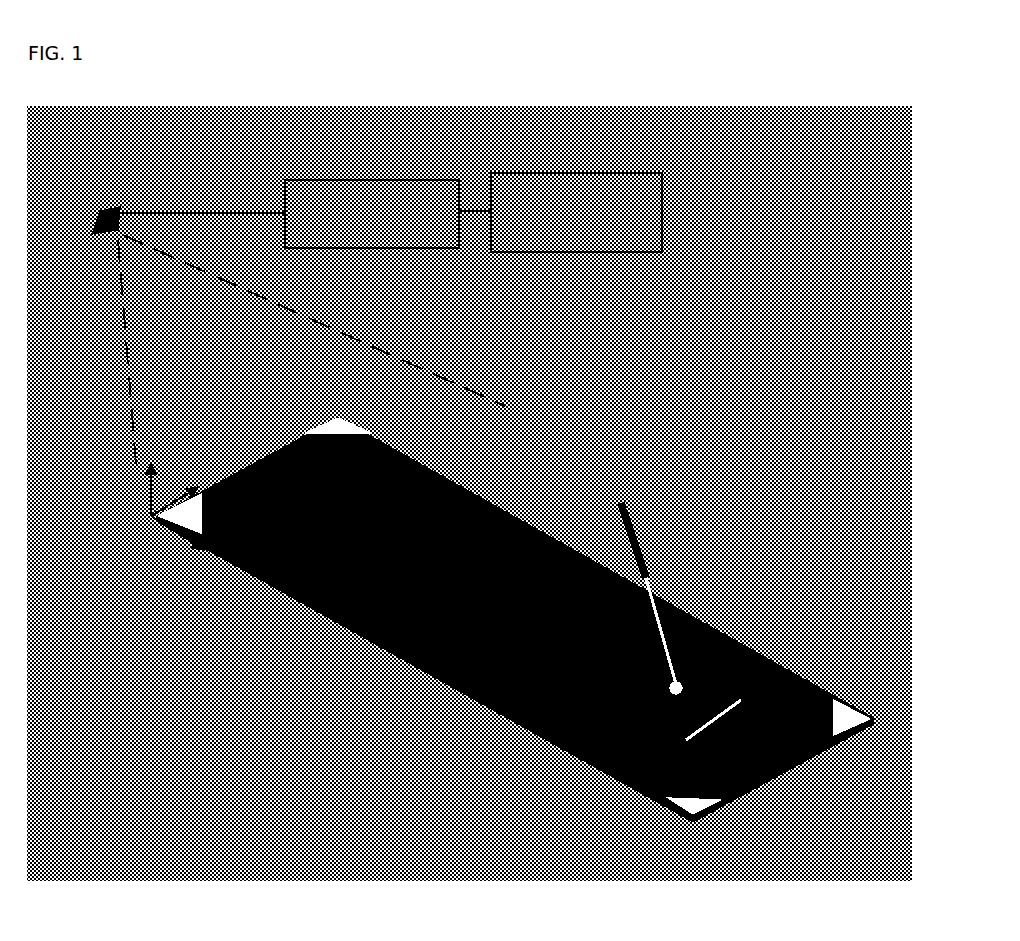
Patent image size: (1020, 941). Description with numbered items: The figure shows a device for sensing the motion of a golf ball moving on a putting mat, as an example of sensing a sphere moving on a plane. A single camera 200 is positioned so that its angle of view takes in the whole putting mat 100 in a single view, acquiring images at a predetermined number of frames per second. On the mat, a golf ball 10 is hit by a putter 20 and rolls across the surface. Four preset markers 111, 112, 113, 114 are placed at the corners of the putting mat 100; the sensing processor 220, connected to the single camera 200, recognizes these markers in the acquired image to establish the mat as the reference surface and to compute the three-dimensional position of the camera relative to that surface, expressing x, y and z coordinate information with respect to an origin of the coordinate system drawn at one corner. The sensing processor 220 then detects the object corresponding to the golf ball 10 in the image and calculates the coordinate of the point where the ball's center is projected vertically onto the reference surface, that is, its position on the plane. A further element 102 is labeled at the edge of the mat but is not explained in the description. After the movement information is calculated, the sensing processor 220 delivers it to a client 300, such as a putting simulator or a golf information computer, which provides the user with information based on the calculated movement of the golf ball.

The single camera 200 is at (105, 197).
The sensing processor 220 is at (380, 240).
The client 300 is at (590, 244).
The putting mat 100 is at (376, 658).
The surface plane 102 is at (520, 682).
The marker 111 is at (330, 418).
The marker 112 is at (157, 520).
The marker 113 is at (668, 790).
The marker 114 is at (842, 697).
The golf ball 10 is at (664, 680).
The putter 20 is at (643, 570).